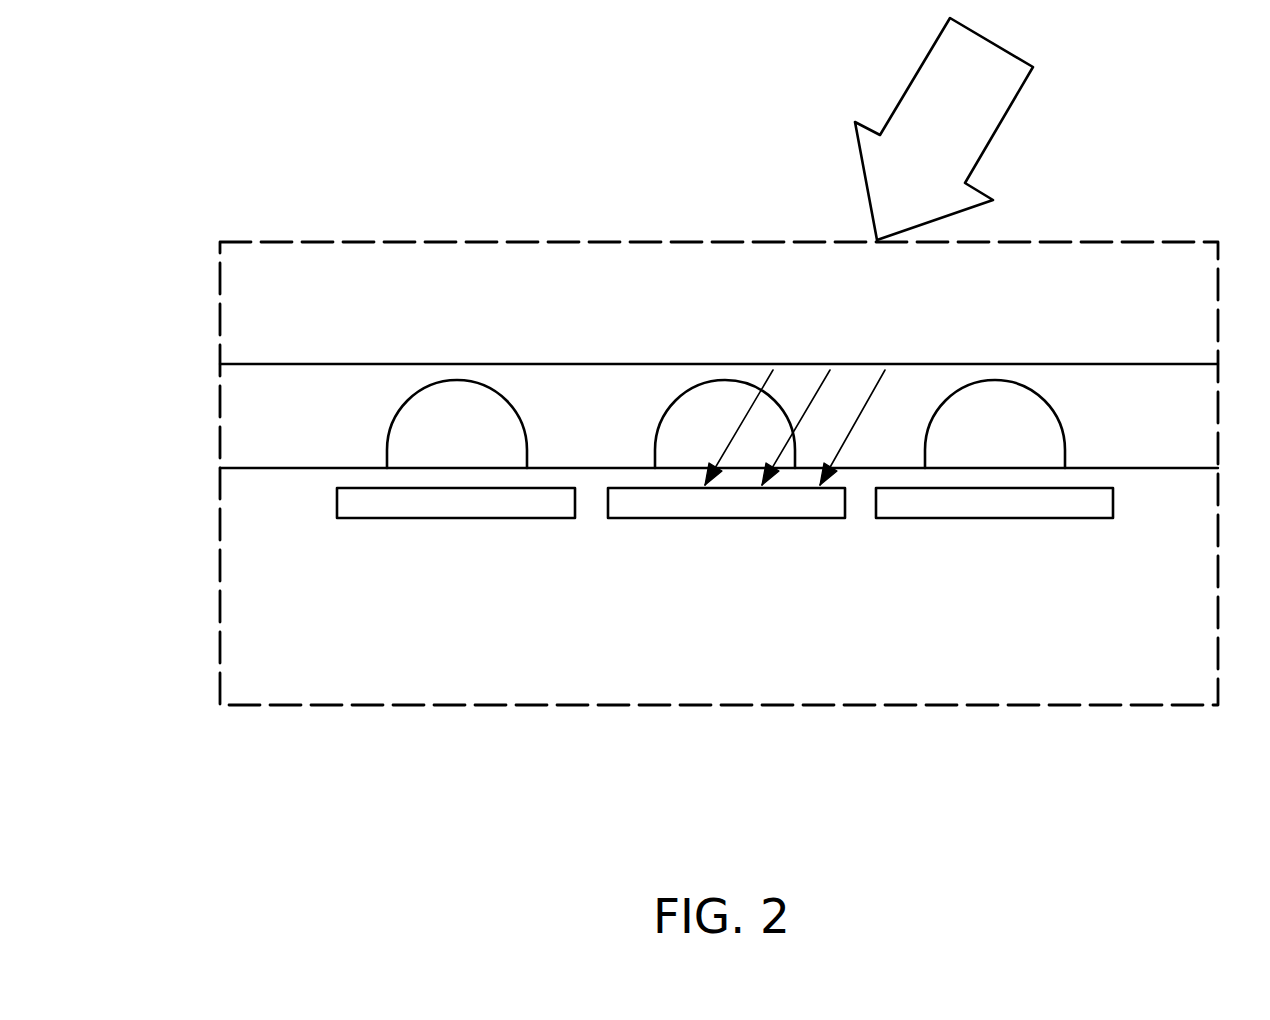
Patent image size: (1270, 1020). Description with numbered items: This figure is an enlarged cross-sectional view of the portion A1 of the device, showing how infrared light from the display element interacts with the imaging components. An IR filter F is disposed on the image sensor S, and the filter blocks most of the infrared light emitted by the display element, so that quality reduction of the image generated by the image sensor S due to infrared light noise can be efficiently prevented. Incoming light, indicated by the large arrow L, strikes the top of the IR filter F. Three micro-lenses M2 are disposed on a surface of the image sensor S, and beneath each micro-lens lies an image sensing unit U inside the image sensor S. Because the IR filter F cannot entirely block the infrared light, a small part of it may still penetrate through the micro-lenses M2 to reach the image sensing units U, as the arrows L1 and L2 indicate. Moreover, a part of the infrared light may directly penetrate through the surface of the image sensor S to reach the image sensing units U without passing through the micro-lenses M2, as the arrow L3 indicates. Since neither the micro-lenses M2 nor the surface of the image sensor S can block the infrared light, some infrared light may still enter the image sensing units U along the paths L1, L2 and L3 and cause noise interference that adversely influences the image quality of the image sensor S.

The portion A1 is at (155, 97).
The IR filter F is at (233, 310).
The image sensor S is at (233, 580).
The micro-lenses M2 is at (478, 448).
The image sensing units U is at (545, 505).
The incident light L is at (915, 75).
The arrow L1 is at (756, 403).
The arrow L2 is at (810, 403).
The arrow L3 is at (873, 393).